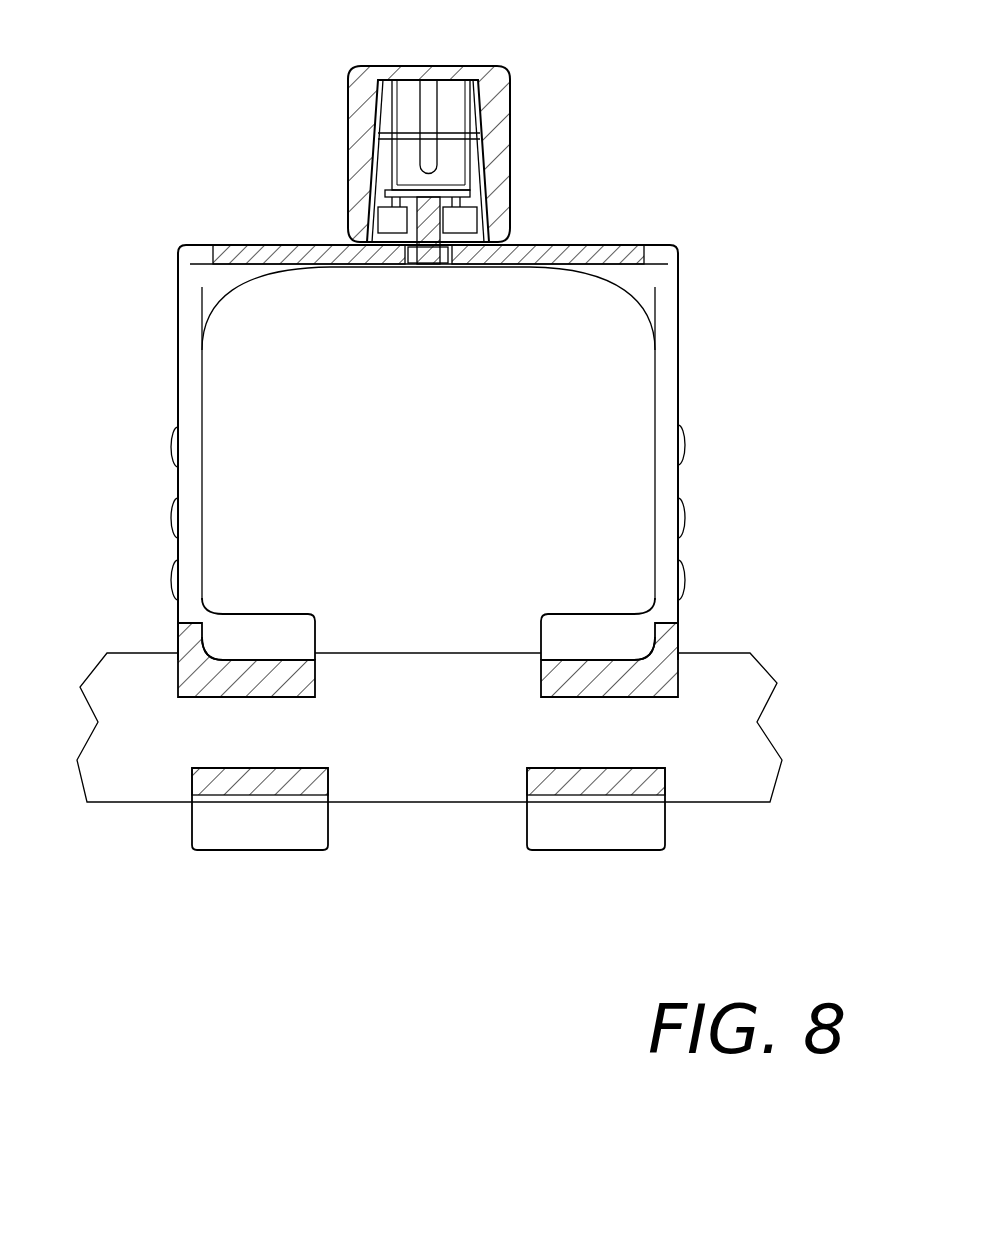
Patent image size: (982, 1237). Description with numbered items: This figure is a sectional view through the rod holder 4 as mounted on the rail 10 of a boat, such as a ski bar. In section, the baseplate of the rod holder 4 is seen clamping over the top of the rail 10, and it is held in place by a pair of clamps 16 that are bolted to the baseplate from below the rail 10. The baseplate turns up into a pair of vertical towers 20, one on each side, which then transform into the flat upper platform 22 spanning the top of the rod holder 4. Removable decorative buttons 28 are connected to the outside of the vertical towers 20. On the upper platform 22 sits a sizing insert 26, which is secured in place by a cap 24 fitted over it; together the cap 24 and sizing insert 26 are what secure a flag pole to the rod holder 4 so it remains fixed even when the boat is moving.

The rod holder 4 is at (190, 78).
The rail 10 is at (82, 783).
The clamps 16 is at (330, 830).
The vertical towers 20 is at (178, 383).
The upper platform 22 is at (308, 234).
The cap 24 is at (502, 105).
The sizing insert 26 is at (455, 95).
The decorative buttons 28 is at (177, 453).